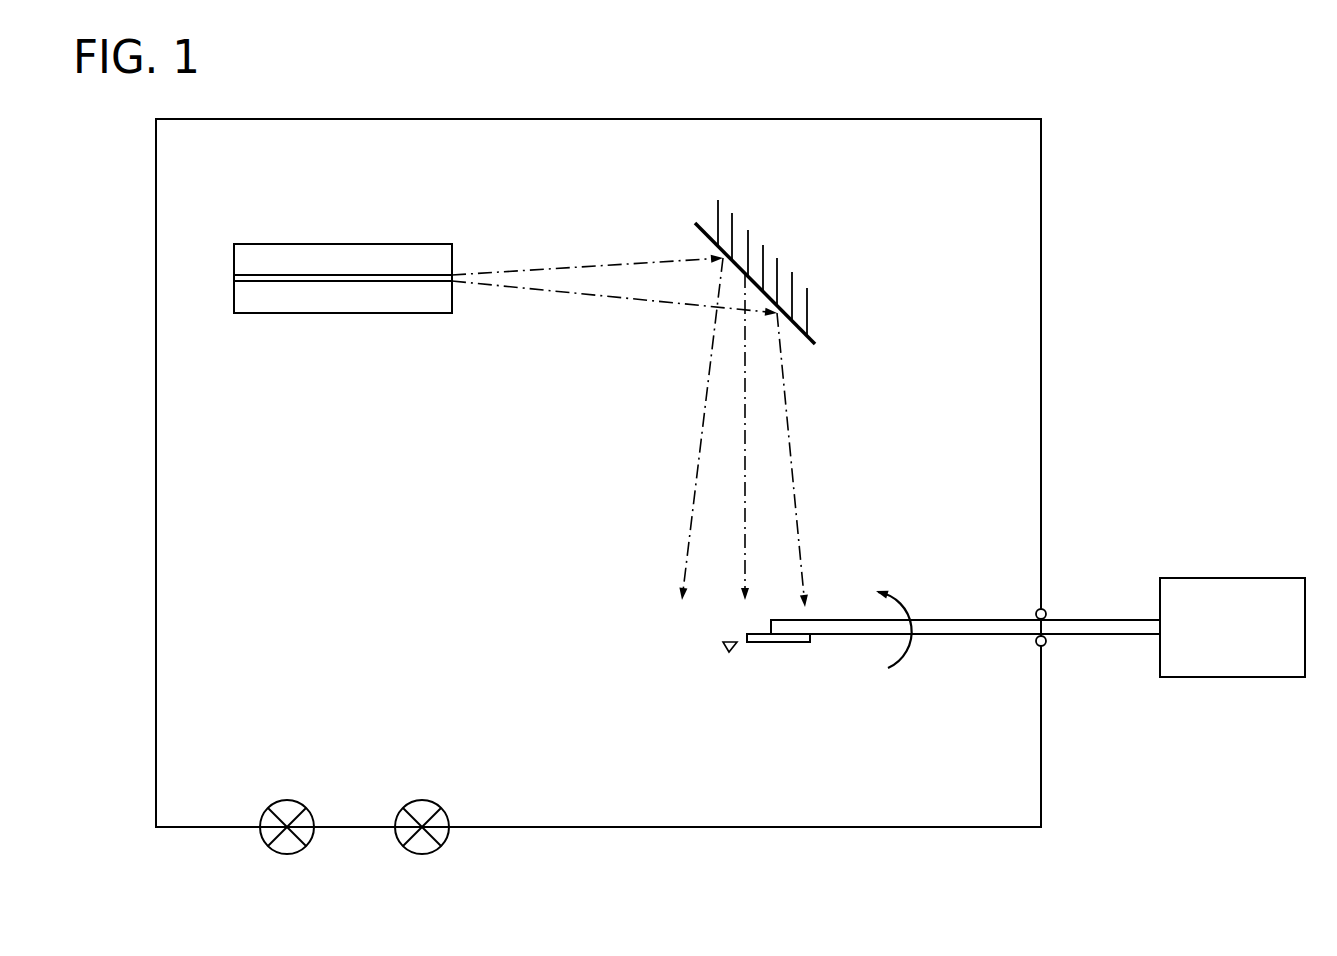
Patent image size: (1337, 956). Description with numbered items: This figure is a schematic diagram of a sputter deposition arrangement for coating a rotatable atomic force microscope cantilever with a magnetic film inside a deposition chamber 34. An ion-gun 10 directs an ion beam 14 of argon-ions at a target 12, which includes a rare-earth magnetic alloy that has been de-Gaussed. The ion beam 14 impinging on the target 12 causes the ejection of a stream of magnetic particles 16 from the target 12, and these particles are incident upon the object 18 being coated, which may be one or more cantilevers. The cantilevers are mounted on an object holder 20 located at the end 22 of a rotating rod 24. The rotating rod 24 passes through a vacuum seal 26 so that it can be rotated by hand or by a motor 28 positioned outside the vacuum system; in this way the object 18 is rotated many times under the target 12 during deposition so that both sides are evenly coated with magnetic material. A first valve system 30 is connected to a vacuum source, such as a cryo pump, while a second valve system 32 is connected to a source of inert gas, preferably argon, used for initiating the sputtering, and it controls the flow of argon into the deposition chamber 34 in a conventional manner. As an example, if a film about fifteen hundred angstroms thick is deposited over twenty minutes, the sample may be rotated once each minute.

The ion-gun 10 is at (338, 313).
The target 12 is at (815, 343).
The ion beam 14 is at (595, 293).
The stream of magnetic particles 16 is at (820, 455).
The object 18 is at (751, 663).
The object holder 20 is at (788, 643).
The end 22 is at (748, 624).
The rotating rod 24 is at (1042, 627).
The vacuum seal 26 is at (1060, 594).
The motor 28 is at (1232, 627).
The first valve system 30 is at (287, 800).
The second valve system 32 is at (423, 800).
The deposition chamber 34 is at (1041, 301).